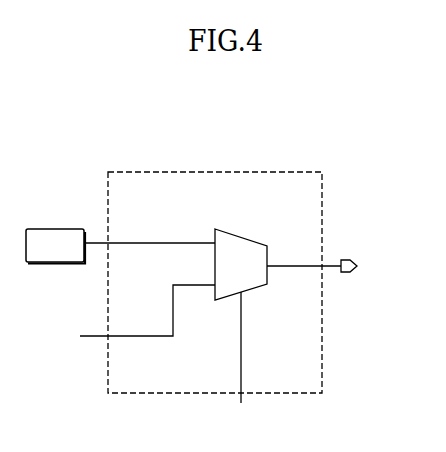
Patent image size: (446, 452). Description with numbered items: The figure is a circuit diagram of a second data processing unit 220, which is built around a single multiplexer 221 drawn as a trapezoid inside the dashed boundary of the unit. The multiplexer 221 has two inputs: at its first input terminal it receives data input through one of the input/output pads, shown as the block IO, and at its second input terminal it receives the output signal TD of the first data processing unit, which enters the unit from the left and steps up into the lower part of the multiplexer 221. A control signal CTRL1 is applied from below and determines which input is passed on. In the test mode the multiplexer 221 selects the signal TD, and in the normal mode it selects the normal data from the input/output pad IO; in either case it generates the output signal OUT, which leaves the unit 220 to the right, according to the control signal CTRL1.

The second data processing unit 220 is at (223, 172).
The multiplexer 221 is at (232, 236).
The input/output pad IO is at (120, 246).
The output signal of the first data processing unit TD is at (129, 317).
The output signal OUT is at (336, 266).
The control signal CTRL1 is at (243, 360).